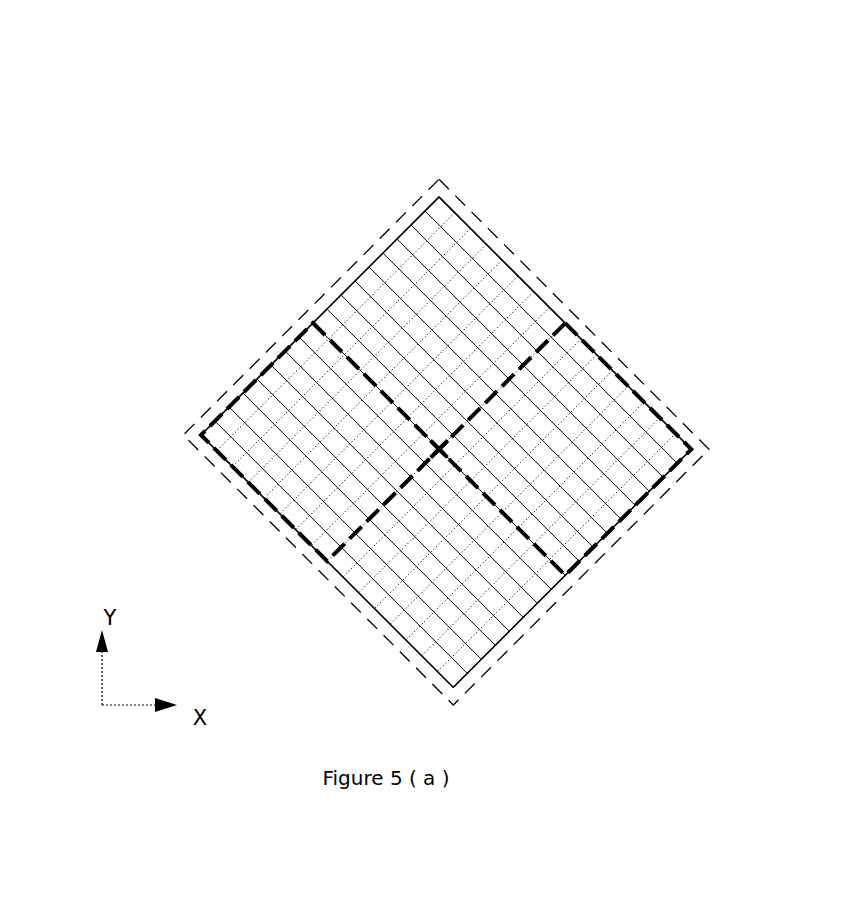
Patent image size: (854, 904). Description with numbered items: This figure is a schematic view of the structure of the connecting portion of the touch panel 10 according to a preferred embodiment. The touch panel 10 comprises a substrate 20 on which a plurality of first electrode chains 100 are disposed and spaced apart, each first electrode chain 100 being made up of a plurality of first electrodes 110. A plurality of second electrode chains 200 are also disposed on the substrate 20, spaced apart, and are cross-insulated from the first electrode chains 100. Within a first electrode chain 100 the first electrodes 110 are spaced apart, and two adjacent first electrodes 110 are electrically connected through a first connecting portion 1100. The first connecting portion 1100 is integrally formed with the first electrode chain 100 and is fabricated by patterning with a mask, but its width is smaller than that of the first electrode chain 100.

The touch panel 10 is at (426, 36).
The substrate 20 is at (326, 306).
The first electrode chain 100 is at (152, 436).
The first electrode 110 is at (635, 378).
The second electrode chain 200 is at (438, 158).
The first connecting portion 1100 is at (434, 465).